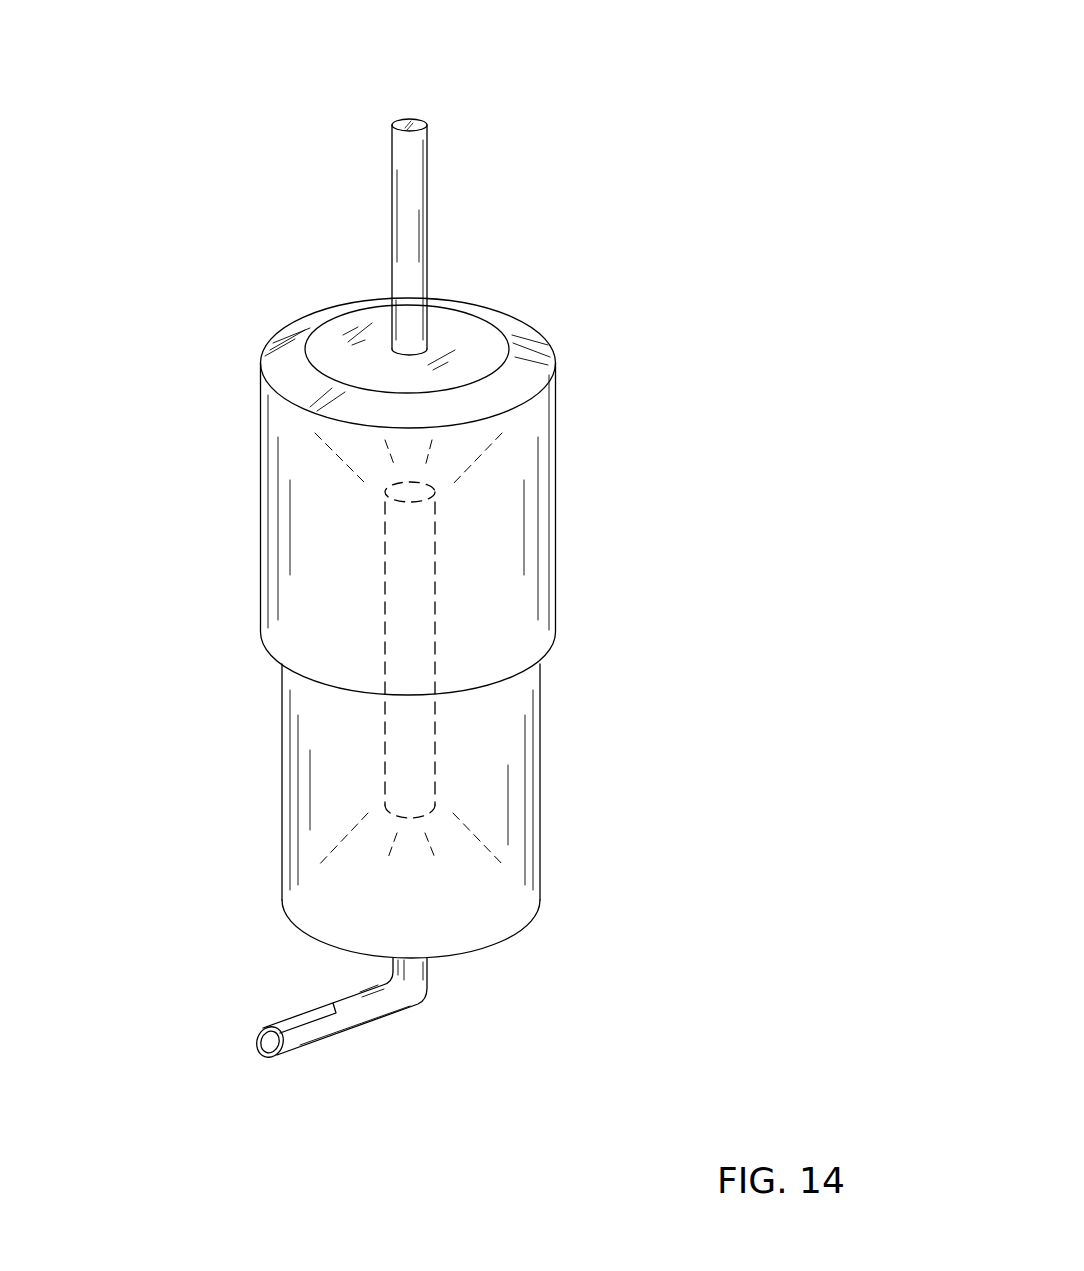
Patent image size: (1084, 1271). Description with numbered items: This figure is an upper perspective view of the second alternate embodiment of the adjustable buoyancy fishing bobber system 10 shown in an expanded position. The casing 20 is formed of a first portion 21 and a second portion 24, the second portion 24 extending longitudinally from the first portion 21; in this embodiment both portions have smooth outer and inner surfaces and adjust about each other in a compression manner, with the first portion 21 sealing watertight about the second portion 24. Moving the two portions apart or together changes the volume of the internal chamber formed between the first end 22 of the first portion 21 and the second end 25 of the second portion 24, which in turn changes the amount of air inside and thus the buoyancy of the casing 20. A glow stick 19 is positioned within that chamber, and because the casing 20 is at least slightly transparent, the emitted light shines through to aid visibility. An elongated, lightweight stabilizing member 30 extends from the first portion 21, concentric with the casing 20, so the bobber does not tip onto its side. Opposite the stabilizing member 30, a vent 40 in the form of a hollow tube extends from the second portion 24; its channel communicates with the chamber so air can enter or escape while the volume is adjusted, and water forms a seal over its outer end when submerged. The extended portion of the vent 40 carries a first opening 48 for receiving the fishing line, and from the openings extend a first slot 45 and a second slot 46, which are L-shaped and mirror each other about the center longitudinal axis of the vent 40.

The adjustable buoyancy fishing bobber system 10 is at (580, 108).
The stabilizing member 30 is at (417, 210).
The casing 20 is at (260, 525).
The first portion 21 is at (556, 455).
The first end 22 is at (468, 327).
The glow stick 19 is at (435, 650).
The second portion 24 is at (542, 843).
The second end 25 is at (495, 947).
The vent 40 is at (412, 998).
The first opening 48 is at (335, 1015).
The first slot 45 is at (303, 1030).
The second slot 46 is at (258, 1045).